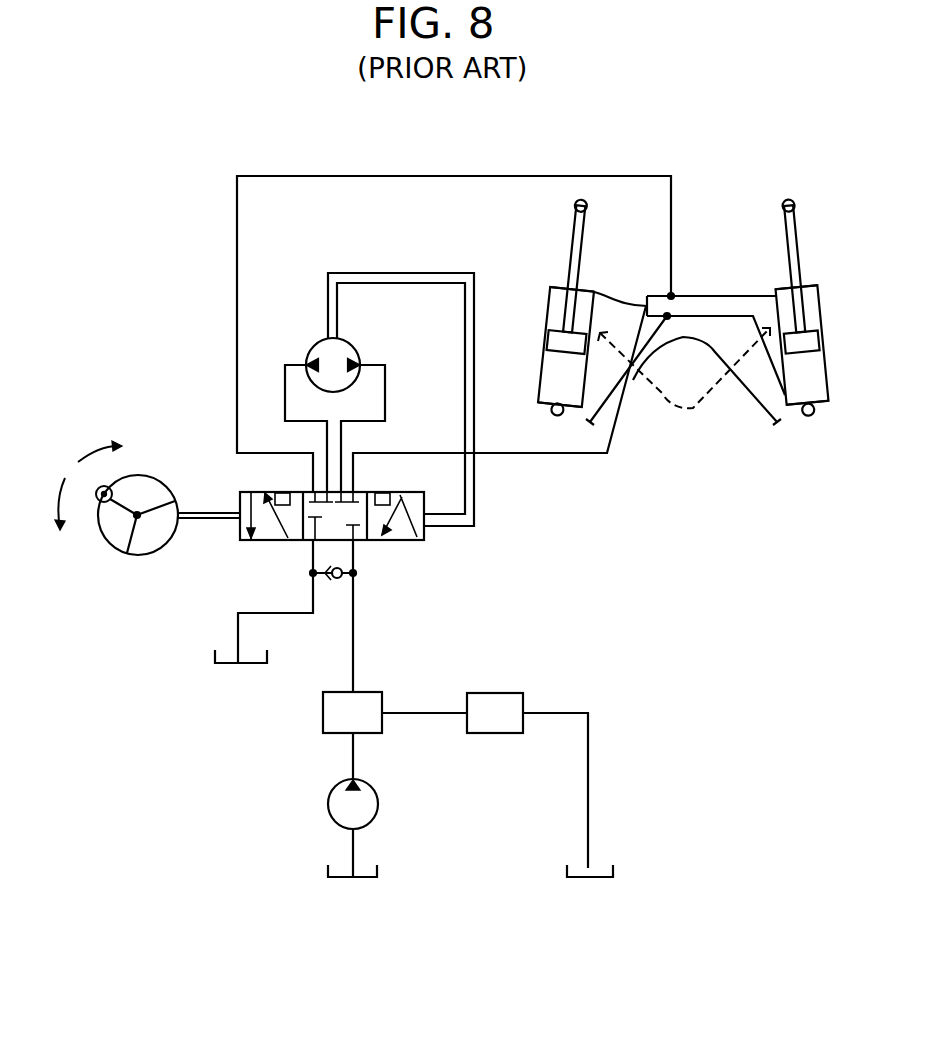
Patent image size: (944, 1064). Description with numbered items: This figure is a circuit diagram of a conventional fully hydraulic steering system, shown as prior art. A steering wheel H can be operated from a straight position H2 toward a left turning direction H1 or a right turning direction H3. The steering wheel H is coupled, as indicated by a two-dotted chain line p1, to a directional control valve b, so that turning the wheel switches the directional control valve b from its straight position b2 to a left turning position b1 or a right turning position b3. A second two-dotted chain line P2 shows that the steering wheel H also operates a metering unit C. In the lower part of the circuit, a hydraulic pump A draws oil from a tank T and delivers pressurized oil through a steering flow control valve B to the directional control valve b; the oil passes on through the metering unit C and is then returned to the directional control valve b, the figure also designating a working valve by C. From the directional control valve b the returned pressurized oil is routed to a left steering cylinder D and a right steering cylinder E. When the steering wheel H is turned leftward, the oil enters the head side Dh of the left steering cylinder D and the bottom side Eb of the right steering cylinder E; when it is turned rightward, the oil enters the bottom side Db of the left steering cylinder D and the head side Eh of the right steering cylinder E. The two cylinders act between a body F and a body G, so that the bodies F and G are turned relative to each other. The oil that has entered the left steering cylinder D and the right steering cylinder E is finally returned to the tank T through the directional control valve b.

The dotted chain line P2 is at (368, 270).
The metering unit C is at (320, 353).
The left steering cylinder D is at (550, 292).
The head side Dh is at (550, 320).
The bottom side Db is at (550, 380).
The right steering cylinder E is at (827, 289).
The head side Eh is at (813, 317).
The bottom side Eb is at (820, 380).
The body F is at (668, 403).
The body G is at (743, 393).
The steering wheel H is at (128, 554).
The left turning direction H1 is at (61, 517).
The straight position H2 is at (97, 492).
The right turning direction H3 is at (102, 441).
The dotted chain line p1 is at (197, 521).
The directional control valve b is at (324, 526).
The left turning position b1 is at (243, 488).
The straight position b2 is at (307, 540).
The right turning position b3 is at (417, 495).
The steering flow control valve B is at (323, 710).
The hydraulic pump A is at (328, 803).
The tank T is at (228, 665).